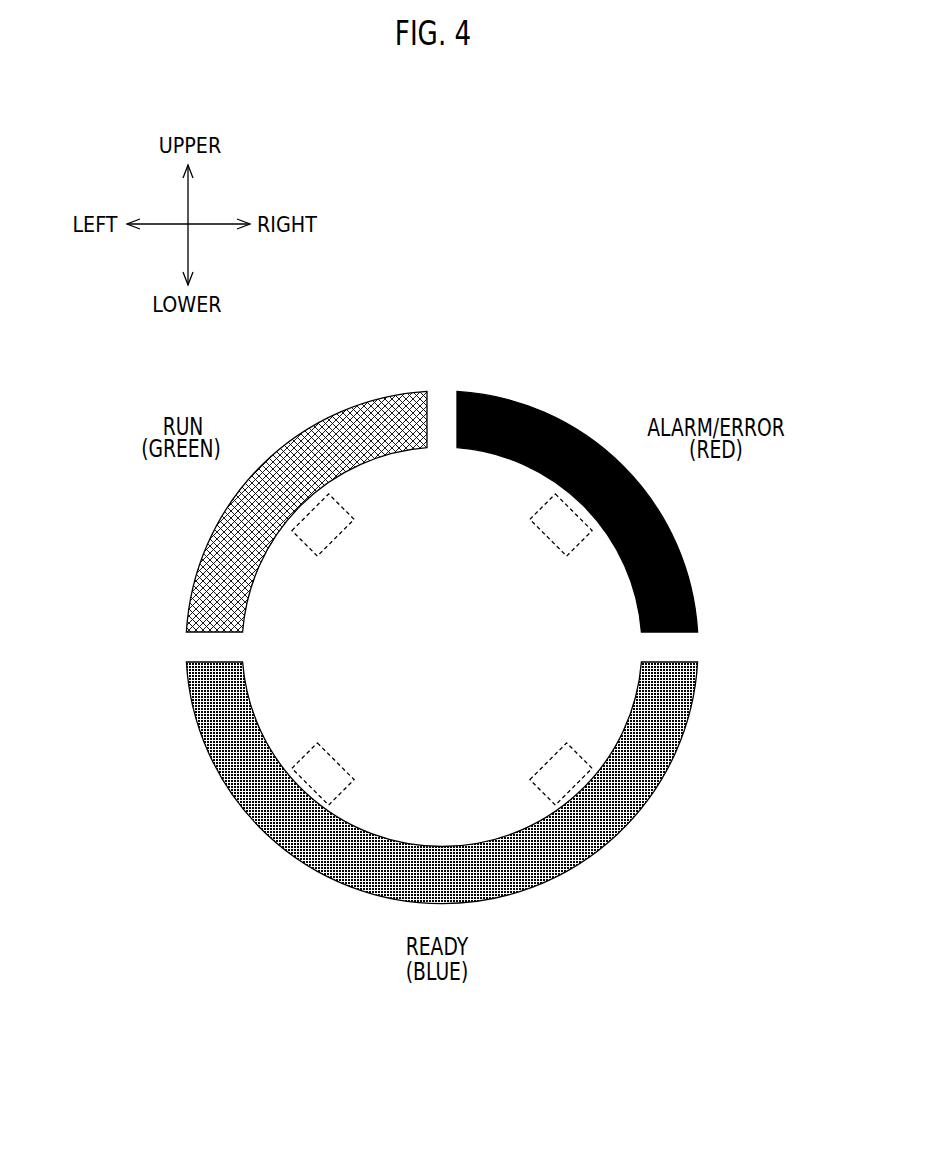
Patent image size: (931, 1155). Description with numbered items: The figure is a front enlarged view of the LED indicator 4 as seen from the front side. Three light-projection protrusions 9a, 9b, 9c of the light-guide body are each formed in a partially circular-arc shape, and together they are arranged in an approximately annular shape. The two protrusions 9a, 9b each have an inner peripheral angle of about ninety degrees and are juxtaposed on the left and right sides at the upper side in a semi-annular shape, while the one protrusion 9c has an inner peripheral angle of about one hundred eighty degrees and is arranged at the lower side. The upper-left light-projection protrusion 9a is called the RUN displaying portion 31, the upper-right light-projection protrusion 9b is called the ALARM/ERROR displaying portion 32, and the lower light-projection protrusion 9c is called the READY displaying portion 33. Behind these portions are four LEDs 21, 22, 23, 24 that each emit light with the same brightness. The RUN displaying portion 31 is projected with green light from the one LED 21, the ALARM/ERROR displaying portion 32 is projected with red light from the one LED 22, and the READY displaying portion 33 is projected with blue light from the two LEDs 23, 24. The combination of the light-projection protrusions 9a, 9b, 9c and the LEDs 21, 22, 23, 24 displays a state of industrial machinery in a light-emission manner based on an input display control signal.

The LED indicator 4 is at (150, 635).
The light-projection protrusion 9a is at (330, 513).
The light-projection protrusion 9b is at (528, 400).
The light-projection protrusion 9c is at (470, 860).
The LED 21 is at (305, 437).
The LED 22 is at (557, 517).
The LED 23 is at (340, 790).
The LED 24 is at (572, 782).
The RUN displaying portion 31 is at (372, 300).
The ALARM/ERROR displaying portion 32 is at (620, 305).
The READY displaying portion 33 is at (690, 835).